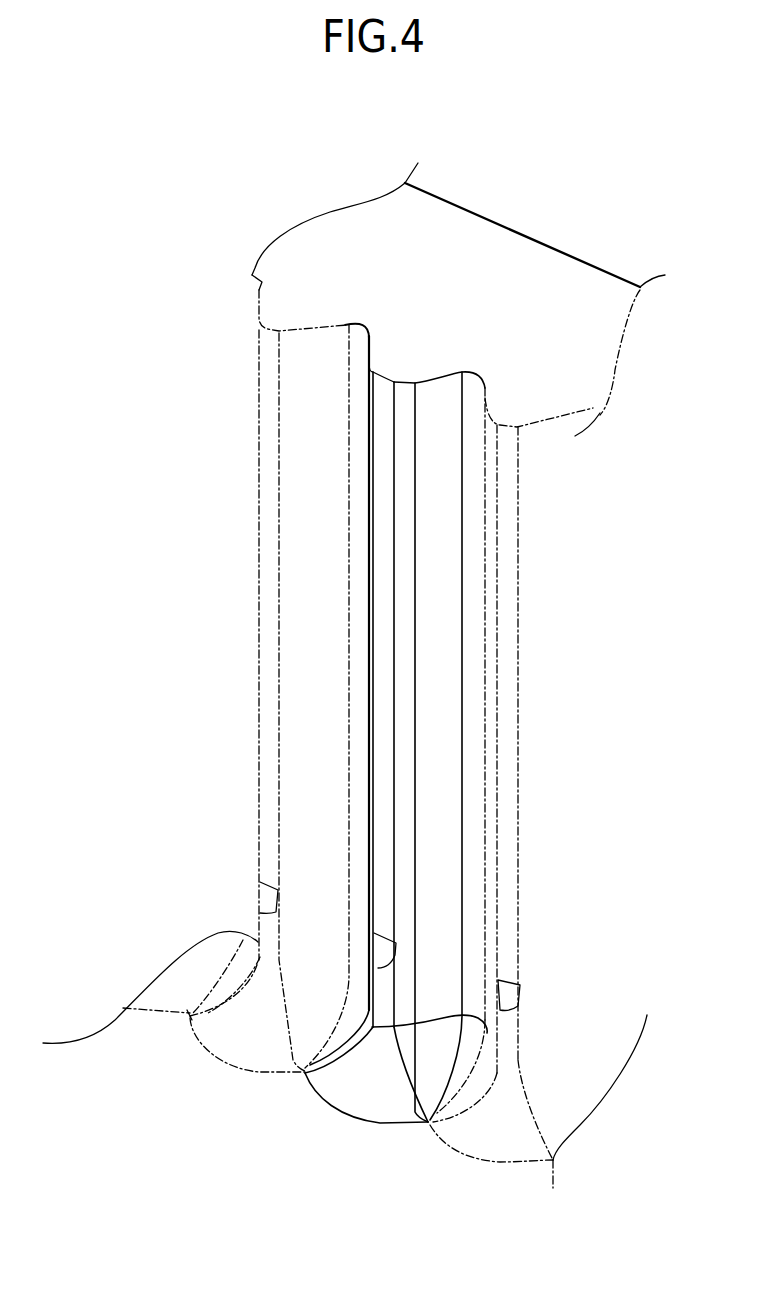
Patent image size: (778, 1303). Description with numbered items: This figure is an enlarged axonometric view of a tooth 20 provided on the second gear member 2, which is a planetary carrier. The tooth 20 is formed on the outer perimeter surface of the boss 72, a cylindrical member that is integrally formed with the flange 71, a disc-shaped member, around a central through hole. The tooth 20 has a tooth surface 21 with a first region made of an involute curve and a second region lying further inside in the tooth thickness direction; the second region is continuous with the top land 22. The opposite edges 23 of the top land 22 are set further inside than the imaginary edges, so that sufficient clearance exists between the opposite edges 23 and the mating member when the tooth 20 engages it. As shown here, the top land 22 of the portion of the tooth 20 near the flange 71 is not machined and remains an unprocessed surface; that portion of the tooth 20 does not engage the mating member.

The second gear member 2 is at (240, 298).
The tooth 20 is at (365, 435).
The tooth surface 21 is at (435, 488).
The top land 22 is at (382, 542).
The opposite edges 23 is at (395, 607).
The flange 71 is at (113, 1047).
The boss 72 is at (523, 288).